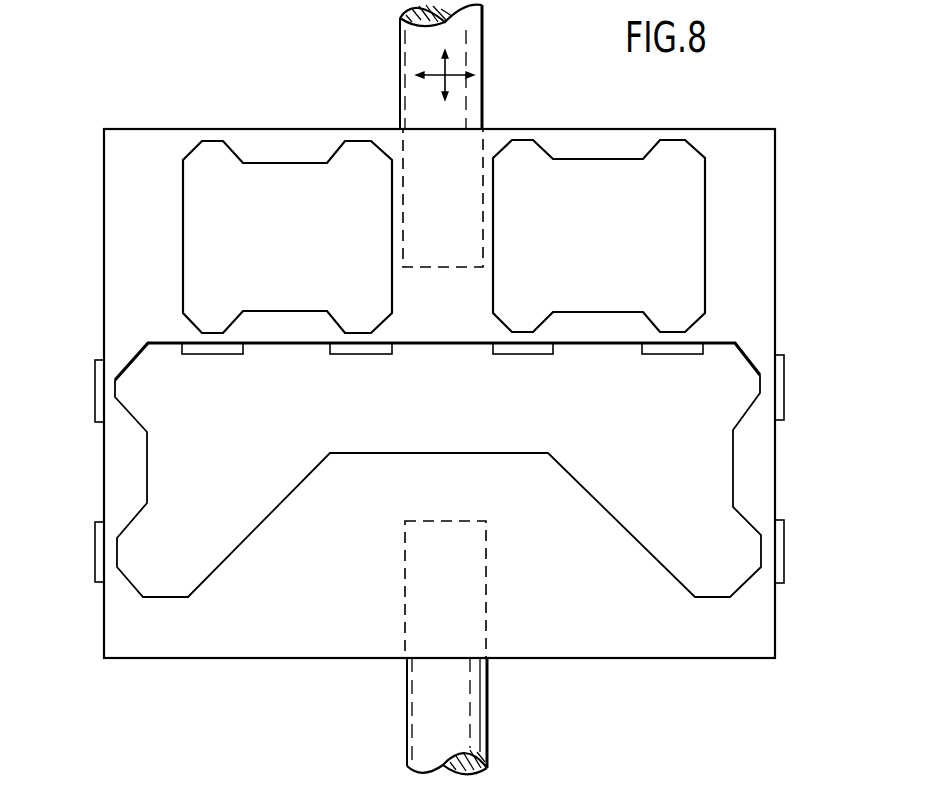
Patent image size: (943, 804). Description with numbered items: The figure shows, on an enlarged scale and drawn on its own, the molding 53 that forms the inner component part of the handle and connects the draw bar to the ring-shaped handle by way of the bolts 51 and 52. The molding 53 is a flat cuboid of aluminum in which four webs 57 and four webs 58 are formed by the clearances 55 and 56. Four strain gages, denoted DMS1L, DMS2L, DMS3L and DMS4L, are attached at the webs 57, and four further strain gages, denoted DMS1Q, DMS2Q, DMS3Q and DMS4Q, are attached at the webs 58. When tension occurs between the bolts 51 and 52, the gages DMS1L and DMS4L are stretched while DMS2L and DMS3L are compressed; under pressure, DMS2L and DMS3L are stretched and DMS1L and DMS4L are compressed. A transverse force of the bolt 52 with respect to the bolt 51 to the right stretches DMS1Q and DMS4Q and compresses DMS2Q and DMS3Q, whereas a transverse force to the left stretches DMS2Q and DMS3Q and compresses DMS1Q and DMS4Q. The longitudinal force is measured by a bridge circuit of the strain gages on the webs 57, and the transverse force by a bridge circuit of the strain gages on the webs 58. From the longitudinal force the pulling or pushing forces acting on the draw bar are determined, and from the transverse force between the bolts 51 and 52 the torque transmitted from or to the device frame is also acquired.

The bolt 51 is at (468, 728).
The bolt 52 is at (484, 46).
The molding 53 is at (577, 562).
The clearance 55 is at (311, 235).
The clearance 56 is at (614, 460).
The web 57 is at (212, 341).
The web 58 is at (122, 389).
The strain gage DMS1L is at (215, 381).
The strain gage DMS2L is at (363, 378).
The strain gage DMS3L is at (524, 378).
The strain gage DMS4L is at (675, 379).
The strain gage DMS1Q is at (48, 558).
The strain gage DMS2Q is at (51, 396).
The strain gage DMS3Q is at (826, 554).
The strain gage DMS4Q is at (827, 394).